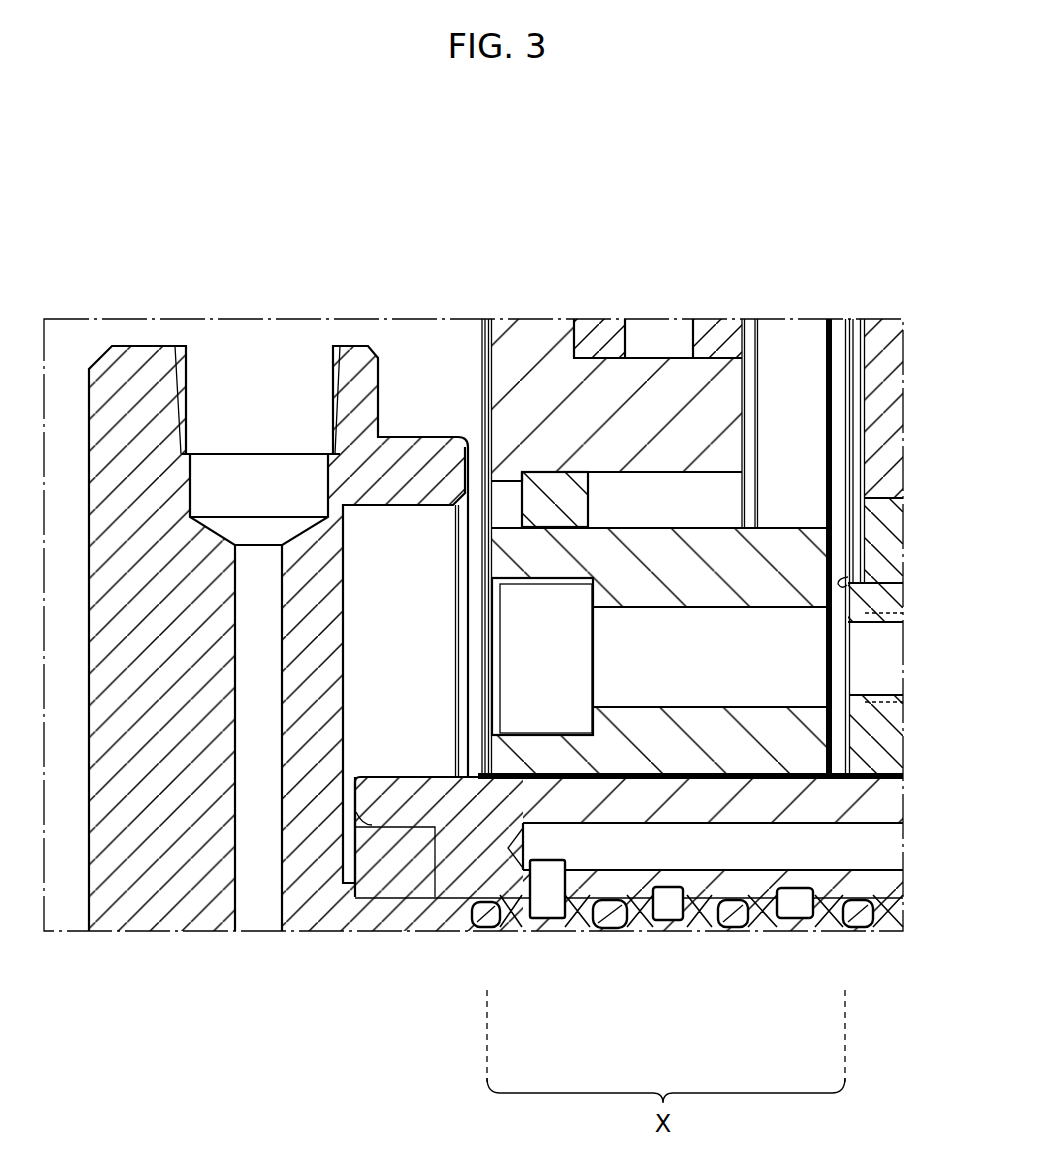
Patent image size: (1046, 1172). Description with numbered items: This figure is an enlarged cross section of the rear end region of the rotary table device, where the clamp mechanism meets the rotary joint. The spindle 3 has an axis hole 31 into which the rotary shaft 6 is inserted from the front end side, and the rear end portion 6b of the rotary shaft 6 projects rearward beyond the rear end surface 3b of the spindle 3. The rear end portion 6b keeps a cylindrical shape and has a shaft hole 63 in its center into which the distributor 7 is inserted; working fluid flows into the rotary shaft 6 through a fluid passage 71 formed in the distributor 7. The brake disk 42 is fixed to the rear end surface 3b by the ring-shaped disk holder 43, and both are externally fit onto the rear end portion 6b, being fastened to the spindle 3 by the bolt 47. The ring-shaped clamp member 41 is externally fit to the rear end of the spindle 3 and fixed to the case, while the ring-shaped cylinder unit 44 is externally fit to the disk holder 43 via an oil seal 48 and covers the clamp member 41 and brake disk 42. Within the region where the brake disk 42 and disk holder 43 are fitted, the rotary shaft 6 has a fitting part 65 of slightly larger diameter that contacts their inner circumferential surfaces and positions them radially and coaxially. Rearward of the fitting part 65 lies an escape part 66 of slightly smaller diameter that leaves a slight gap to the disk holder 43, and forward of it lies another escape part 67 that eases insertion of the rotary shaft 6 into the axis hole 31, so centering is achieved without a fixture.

The spindle 3 is at (895, 605).
The rear end surface of the spindle 3b is at (848, 577).
The rotary shaft 6 is at (890, 808).
The rear end portion of the rotary shaft 6b is at (405, 775).
The distributor 7 is at (183, 913).
The axis hole 31 is at (882, 775).
The clamp member 41 is at (886, 322).
The brake disk 42 is at (836, 320).
The disk holder 43 is at (663, 528).
The cylinder unit 44 is at (535, 327).
The bolt 47 is at (535, 637).
The oil seal 48 is at (545, 482).
The shaft hole 63 is at (522, 895).
The fitting part 65 is at (797, 785).
The escape part 66 is at (680, 782).
The escape part 67 is at (873, 785).
The fluid passage 71 is at (257, 913).